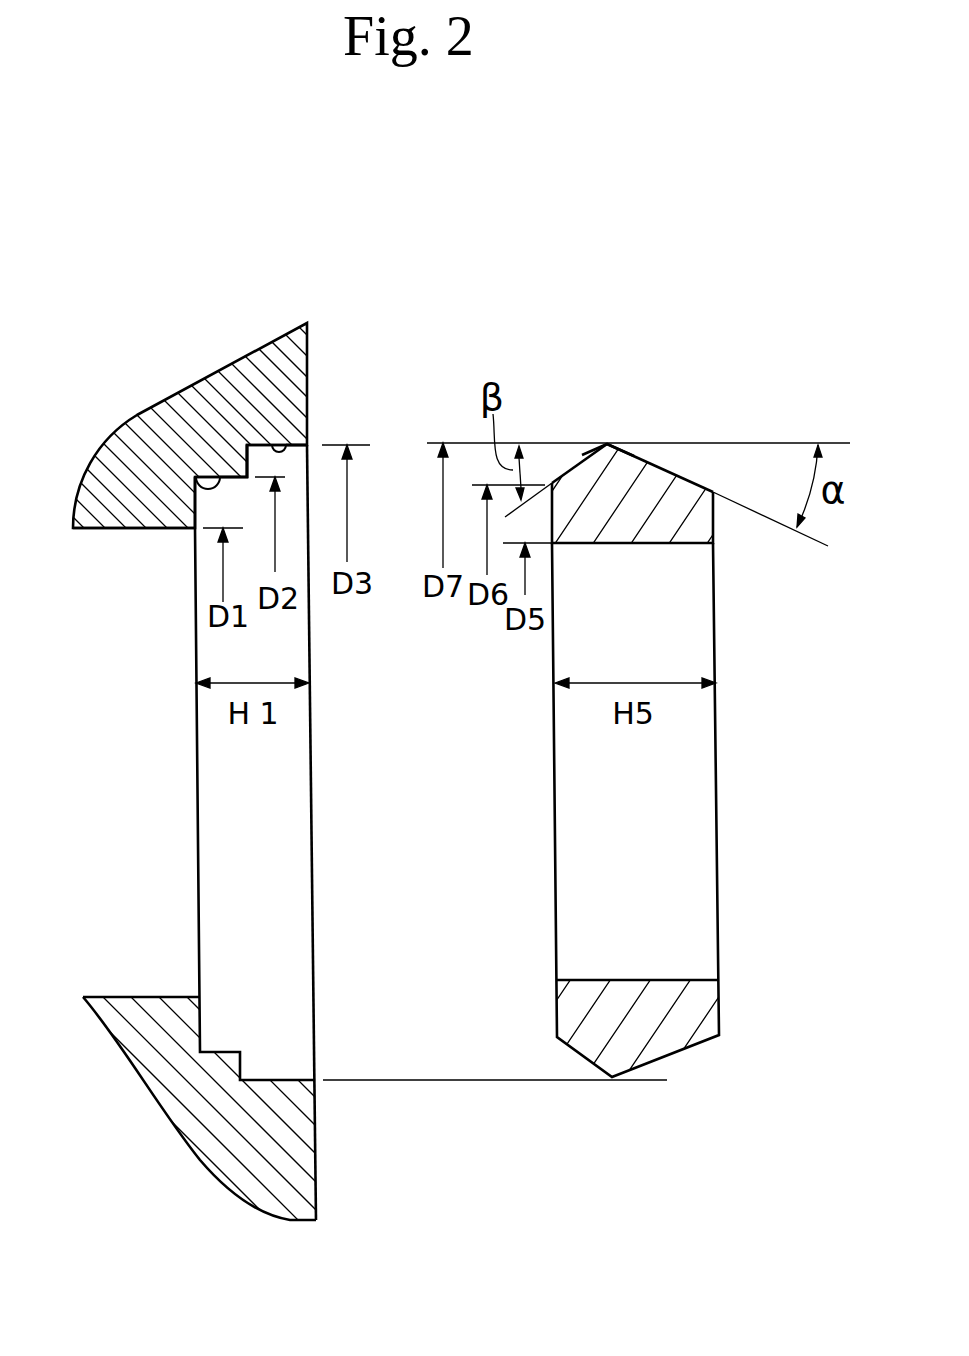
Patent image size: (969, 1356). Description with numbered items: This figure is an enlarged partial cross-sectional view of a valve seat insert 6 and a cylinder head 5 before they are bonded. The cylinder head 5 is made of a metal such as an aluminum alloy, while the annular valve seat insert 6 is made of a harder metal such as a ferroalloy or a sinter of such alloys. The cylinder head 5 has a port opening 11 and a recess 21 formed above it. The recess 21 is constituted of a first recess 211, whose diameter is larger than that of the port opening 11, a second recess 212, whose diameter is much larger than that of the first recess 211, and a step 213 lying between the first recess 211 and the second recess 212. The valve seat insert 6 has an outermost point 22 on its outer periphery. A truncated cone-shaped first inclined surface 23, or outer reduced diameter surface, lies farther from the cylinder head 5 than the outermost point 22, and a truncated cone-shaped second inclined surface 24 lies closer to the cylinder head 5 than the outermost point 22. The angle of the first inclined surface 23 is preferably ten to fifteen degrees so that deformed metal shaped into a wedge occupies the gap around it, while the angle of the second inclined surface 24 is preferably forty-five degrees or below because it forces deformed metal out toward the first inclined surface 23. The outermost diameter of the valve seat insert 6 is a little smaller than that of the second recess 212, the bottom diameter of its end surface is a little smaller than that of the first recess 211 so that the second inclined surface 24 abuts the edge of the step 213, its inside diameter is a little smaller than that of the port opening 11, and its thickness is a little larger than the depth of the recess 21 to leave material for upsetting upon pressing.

The cylinder head 5 is at (312, 384).
The recess 21 is at (43, 258).
The first recess 211 is at (195, 475).
The step 213 is at (245, 470).
The second recess 212 is at (281, 445).
The port opening 11 is at (132, 529).
The valve seat insert 6 is at (707, 443).
The outermost point 22 is at (607, 444).
The first inclined surface 23 is at (666, 452).
The second inclined surface 24 is at (574, 462).